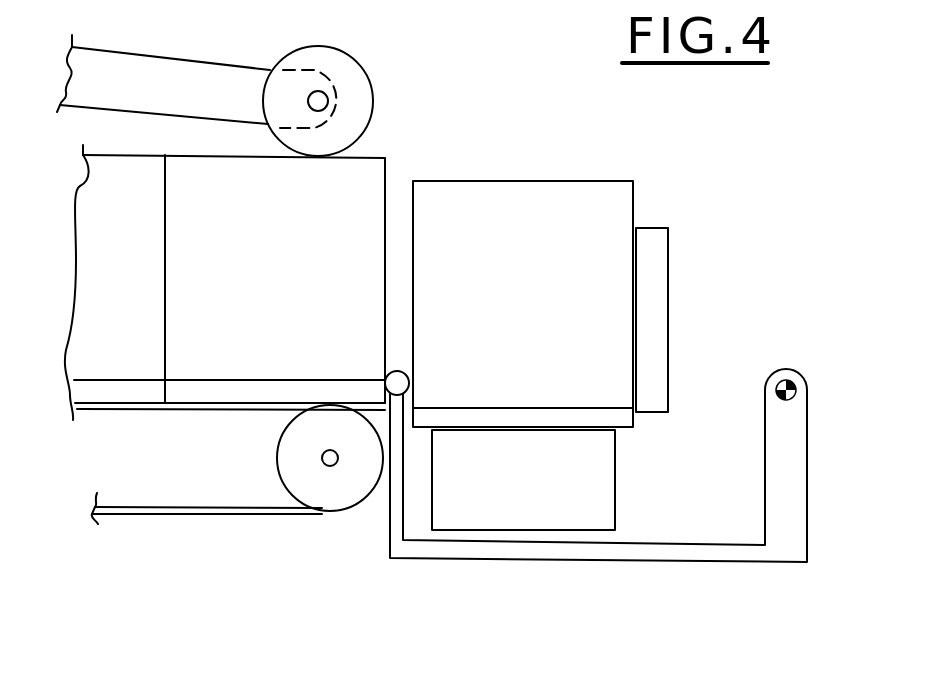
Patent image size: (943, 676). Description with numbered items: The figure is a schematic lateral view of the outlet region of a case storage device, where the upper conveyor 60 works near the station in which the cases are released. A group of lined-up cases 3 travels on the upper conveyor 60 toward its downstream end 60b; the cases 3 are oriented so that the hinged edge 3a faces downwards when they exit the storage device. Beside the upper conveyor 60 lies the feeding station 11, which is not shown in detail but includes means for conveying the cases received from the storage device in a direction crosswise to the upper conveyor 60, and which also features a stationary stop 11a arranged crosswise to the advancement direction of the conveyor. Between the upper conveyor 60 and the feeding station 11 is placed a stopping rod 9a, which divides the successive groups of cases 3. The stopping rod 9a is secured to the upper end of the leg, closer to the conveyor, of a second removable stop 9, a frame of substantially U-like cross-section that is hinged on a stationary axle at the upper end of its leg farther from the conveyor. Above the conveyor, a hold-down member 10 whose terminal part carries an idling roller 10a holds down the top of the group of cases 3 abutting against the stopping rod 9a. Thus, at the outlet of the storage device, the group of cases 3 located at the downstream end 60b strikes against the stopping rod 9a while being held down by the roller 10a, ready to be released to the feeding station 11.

The hold-down member 10 is at (184, 48).
The idling roller 10a is at (360, 80).
The cases 3 is at (602, 202).
The hinged edge 3a is at (133, 388).
The second removable stop 9 is at (620, 555).
The stopping rod 9a is at (403, 382).
The feeding station 11 is at (592, 482).
The stationary stop 11a is at (653, 300).
The upper conveyor 60 is at (190, 510).
The downstream end 60b is at (320, 524).